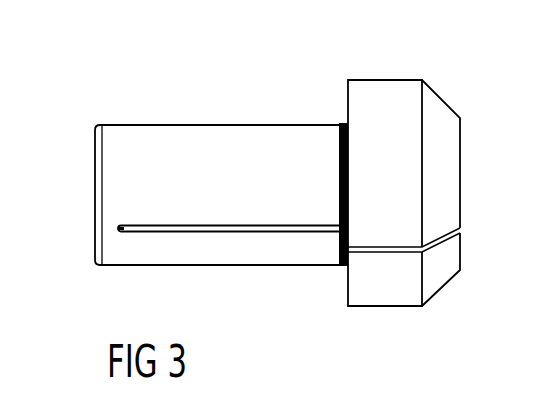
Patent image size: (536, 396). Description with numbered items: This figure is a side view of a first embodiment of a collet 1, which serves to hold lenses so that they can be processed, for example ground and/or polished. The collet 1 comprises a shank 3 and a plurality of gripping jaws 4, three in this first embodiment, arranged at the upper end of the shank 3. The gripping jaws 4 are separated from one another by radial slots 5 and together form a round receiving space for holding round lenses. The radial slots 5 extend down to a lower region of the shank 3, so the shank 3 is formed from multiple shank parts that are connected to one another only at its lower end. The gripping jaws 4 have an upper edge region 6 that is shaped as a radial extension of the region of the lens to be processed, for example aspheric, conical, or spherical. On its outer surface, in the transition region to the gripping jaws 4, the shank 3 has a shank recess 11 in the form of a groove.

The collet 1 is at (76, 55).
The shank 3 is at (113, 165).
The gripping jaws 4 is at (396, 93).
The radial slots 5 is at (214, 233).
The upper edge region 6 is at (446, 268).
The shank recess 11 is at (343, 122).